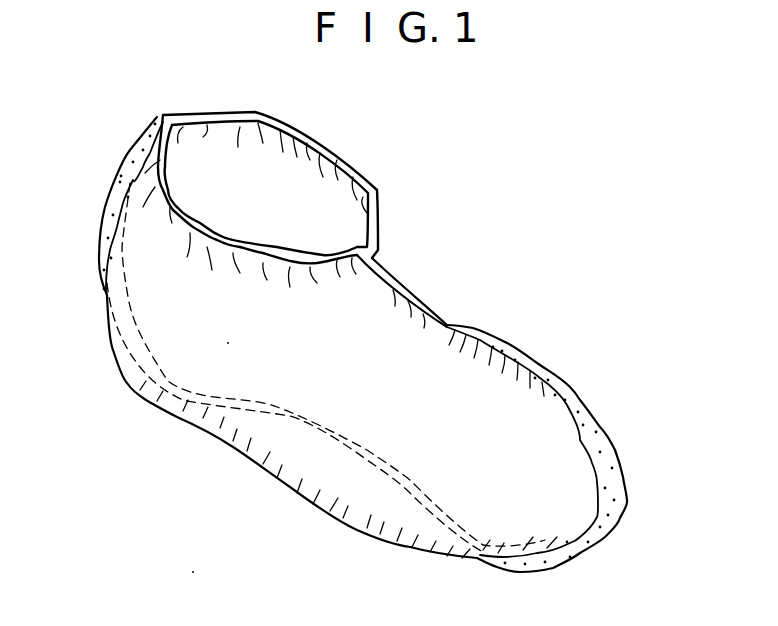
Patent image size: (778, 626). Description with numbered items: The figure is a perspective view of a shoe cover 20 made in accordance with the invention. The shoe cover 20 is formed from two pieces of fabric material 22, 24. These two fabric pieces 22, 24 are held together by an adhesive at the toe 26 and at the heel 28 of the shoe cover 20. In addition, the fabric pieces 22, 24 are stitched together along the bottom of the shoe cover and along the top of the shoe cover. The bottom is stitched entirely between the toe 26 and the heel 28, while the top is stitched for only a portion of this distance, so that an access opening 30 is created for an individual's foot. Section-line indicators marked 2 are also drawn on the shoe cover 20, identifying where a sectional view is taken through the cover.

The shoe cover 20 is at (420, 291).
The piece of fabric material 22 is at (203, 113).
The piece of fabric material 24 is at (153, 153).
The toe 26 is at (517, 515).
The heel 28 is at (177, 350).
The access opening 30 is at (322, 157).
The section line 2- 2 is at (535, 430).